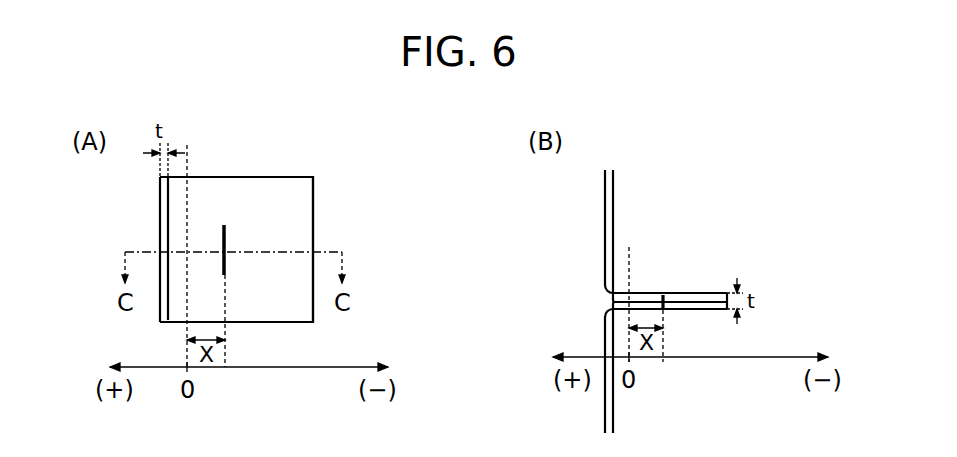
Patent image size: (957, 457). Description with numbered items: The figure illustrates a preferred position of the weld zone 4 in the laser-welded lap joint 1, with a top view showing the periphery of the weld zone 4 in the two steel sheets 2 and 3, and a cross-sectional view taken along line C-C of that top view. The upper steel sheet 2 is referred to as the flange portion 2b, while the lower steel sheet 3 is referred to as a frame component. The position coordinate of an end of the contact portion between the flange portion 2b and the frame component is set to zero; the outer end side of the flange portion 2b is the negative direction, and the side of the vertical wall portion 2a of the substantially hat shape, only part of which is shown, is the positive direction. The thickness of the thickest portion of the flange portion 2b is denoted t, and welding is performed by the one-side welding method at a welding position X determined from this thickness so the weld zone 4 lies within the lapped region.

The laser-welded lap joint 1 is at (316, 110).
The steel sheet 2 is at (293, 190).
The vertical wall portion 2a is at (160, 205).
The flange portion 2b is at (313, 215).
The steel sheet 3 is at (308, 200).
The weld zone 4 is at (224, 226).